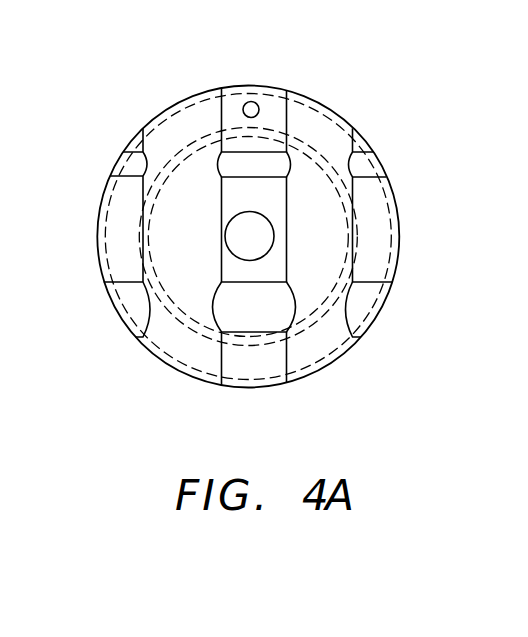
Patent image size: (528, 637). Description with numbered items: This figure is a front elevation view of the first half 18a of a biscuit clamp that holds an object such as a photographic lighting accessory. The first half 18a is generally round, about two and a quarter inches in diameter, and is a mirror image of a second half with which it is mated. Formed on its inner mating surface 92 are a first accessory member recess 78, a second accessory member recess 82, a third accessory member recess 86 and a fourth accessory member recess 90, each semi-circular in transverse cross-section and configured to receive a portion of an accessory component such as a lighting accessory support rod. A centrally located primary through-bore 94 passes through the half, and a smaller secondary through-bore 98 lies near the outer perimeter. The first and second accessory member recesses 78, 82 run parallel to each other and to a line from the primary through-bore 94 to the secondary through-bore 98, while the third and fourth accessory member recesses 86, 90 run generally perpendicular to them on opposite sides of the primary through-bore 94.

The first half 18a is at (165, 363).
The first accessory member recess 78 is at (185, 197).
The second accessory member recess 82 is at (317, 217).
The third accessory member recess 86 is at (360, 302).
The fourth accessory member recess 90 is at (363, 163).
The inner mating surface 92 is at (277, 197).
The primary through-bore 94 is at (260, 255).
The secondary through-bore 98 is at (251, 109).